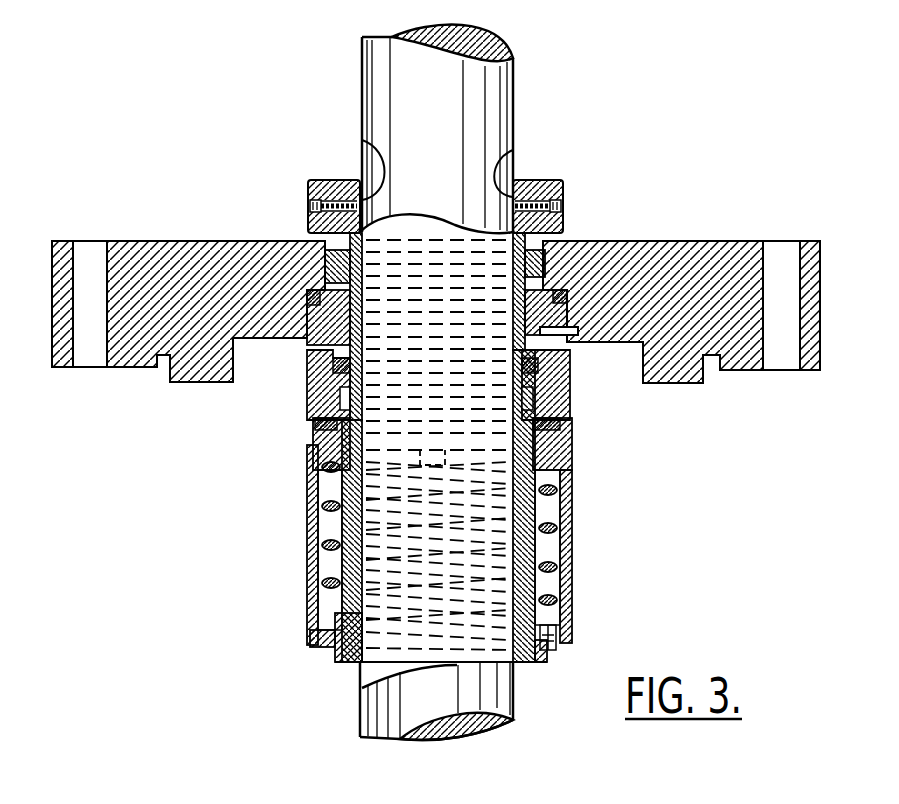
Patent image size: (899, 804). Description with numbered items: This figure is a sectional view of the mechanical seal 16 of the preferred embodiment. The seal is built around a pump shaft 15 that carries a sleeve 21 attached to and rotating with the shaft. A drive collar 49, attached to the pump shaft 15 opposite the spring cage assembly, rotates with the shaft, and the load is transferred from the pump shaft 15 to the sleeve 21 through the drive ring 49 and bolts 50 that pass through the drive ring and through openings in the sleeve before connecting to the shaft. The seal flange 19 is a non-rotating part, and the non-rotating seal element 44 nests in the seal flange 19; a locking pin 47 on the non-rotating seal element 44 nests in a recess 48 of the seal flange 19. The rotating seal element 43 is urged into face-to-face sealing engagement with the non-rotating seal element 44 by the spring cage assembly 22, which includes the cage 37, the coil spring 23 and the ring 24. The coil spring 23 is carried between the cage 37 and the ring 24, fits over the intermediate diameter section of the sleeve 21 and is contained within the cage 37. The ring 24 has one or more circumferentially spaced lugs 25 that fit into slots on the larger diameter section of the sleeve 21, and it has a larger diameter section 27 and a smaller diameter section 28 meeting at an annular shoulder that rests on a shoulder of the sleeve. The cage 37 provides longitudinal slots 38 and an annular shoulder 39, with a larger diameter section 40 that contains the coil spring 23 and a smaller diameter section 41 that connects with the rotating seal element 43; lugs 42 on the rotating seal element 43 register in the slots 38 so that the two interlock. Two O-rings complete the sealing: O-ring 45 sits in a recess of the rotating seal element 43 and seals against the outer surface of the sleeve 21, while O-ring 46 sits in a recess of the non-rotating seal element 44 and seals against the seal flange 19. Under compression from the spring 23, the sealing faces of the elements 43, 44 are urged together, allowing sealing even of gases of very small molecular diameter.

The pump shaft 15 is at (514, 92).
The mechanical seal 16 is at (238, 120).
The seal flange 19 is at (170, 240).
The sleeve 21 is at (378, 165).
The spring cage assembly 22 is at (310, 532).
The coil spring 23 is at (332, 571).
The ring 24 is at (572, 612).
The lugs 25 is at (548, 650).
The larger diameter section 27 is at (322, 584).
The smaller diameter section 28 is at (325, 660).
The cage 37 is at (572, 562).
The longitudinal slots 38 is at (318, 462).
The annular shoulder 39 is at (565, 450).
The larger diameter section 40 is at (572, 530).
The smaller diameter section 41 is at (316, 430).
The lugs 42 is at (572, 427).
The rotating seal element 43 is at (310, 403).
The non-rotating seal element 44 is at (307, 352).
The O-ring 45 is at (520, 362).
The O-ring 46 is at (330, 290).
The locking pin 47 is at (570, 333).
The recess 48 is at (560, 350).
The drive collar 49 is at (310, 185).
The bolts 50 is at (309, 207).